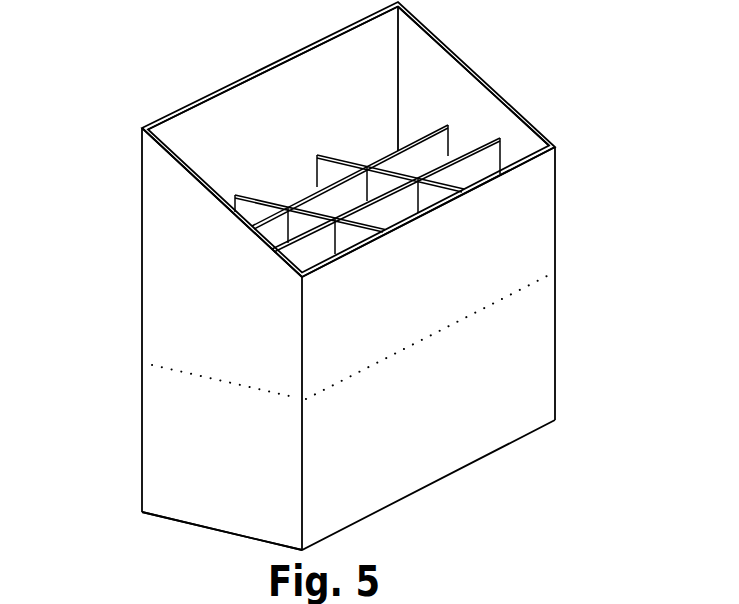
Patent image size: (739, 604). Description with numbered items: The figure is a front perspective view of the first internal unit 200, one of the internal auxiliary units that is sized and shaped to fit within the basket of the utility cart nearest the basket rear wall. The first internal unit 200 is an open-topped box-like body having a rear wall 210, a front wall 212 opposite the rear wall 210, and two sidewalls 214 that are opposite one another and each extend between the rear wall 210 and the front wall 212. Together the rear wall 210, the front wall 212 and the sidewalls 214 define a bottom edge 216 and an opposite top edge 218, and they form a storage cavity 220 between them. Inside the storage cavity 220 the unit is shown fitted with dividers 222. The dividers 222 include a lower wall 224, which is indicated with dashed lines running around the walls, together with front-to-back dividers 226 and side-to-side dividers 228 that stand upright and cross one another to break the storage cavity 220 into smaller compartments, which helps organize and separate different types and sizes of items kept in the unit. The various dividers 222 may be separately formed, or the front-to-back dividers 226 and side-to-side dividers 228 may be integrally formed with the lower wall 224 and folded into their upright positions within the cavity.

The first internal unit 200 is at (346, 275).
The rear wall 210 is at (527, 229).
The front wall 212 is at (273, 100).
The sidewalls 214 is at (176, 306).
The bottom edge 216 is at (508, 447).
The top edge 218 is at (516, 105).
The storage cavity 220 is at (360, 127).
The dividers 222 is at (253, 208).
The lower wall 224 is at (208, 378).
The front-to-back dividers 226 is at (433, 193).
The side-to-side dividers 228 is at (482, 160).